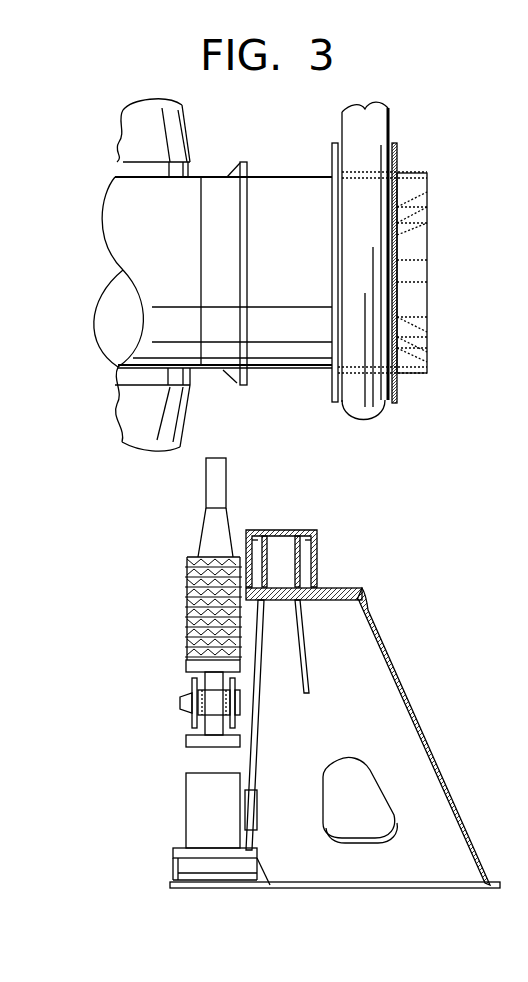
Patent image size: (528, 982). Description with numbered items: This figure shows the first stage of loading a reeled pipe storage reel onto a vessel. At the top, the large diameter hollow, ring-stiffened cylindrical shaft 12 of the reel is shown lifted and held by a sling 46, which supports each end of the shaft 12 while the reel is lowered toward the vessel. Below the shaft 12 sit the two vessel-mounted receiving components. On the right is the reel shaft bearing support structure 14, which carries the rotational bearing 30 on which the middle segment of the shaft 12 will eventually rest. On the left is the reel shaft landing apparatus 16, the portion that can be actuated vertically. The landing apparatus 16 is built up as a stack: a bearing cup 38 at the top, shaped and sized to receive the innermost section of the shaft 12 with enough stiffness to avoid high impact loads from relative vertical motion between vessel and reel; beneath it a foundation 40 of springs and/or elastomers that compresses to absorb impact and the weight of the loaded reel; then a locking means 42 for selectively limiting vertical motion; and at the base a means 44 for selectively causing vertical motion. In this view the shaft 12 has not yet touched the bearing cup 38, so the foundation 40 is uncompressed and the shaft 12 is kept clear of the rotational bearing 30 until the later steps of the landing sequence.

The cylindrical shaft 12 is at (171, 229).
The reel shaft bearing support structure 14 is at (335, 670).
The reel shaft landing apparatus 16 is at (170, 653).
The rotational bearing 30 is at (302, 528).
The bearing cup 38 is at (226, 500).
The foundation 40 is at (177, 622).
The locking means 42 is at (167, 720).
The means for selectively causing vertical motion 44 is at (185, 825).
The sling 46 is at (390, 131).